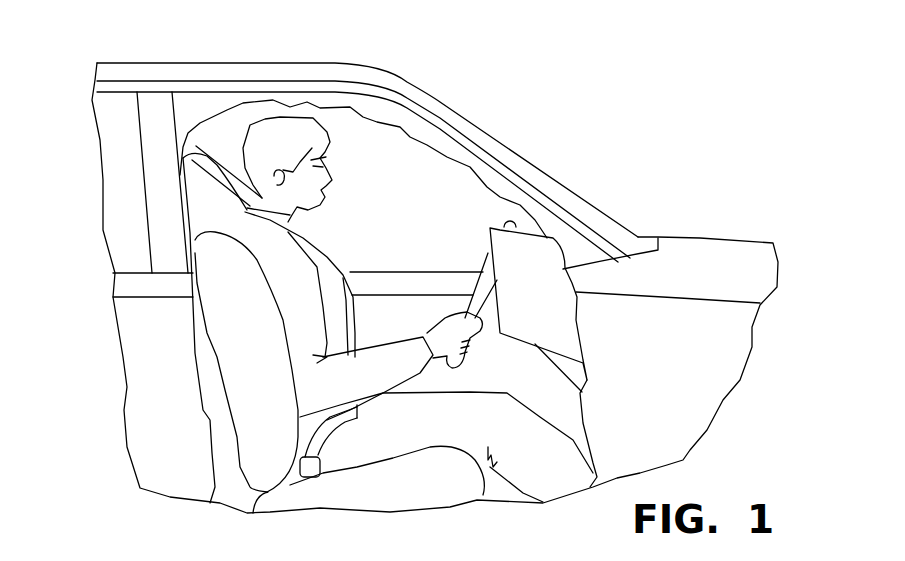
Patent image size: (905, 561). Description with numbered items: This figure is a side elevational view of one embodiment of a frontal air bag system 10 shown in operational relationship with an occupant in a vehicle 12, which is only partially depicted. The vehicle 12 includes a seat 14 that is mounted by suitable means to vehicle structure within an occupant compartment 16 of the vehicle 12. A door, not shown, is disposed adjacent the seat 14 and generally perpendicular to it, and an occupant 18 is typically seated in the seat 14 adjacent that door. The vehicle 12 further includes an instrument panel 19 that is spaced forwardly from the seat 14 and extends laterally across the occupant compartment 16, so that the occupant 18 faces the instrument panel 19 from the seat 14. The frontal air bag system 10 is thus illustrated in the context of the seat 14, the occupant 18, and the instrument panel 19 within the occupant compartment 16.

The frontal air bag system 10 is at (662, 168).
The vehicle 12 is at (146, 58).
The seat 14 is at (233, 375).
The occupant compartment 16 is at (430, 178).
The occupant 18 is at (273, 130).
The instrument panel 19 is at (532, 243).